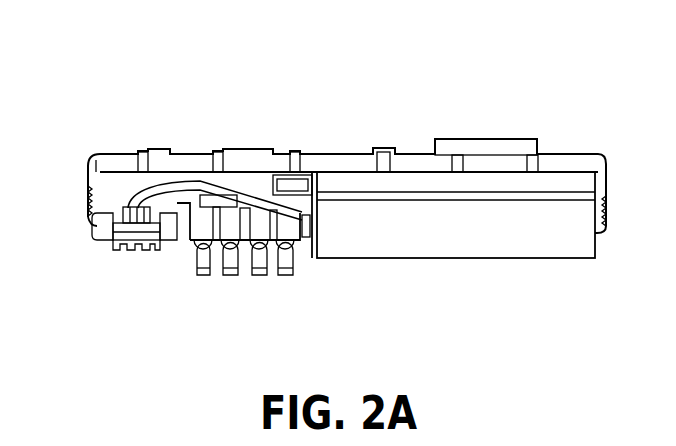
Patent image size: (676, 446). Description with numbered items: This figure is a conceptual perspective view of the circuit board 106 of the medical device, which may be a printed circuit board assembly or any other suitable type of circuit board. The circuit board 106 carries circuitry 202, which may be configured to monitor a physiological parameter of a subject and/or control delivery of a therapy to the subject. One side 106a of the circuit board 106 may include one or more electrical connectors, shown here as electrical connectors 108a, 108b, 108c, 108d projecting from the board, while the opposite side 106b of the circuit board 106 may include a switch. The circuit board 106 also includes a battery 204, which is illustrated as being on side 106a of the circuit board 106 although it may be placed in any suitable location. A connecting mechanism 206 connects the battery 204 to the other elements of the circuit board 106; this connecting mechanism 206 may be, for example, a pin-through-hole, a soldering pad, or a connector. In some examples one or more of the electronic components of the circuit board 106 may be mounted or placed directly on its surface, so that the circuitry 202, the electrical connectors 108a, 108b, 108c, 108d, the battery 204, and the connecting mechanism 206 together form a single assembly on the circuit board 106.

The circuit board 106 is at (400, 70).
The side of circuit board 106a is at (123, 183).
The side of circuit board 106b is at (553, 152).
The electrical connector 108a is at (203, 276).
The electrical connector 108b is at (230, 276).
The electrical connector 108c is at (258, 276).
The electrical connector 108d is at (285, 276).
The circuitry 202 is at (137, 275).
The battery 204 is at (498, 250).
The connecting mechanism 206 is at (120, 224).